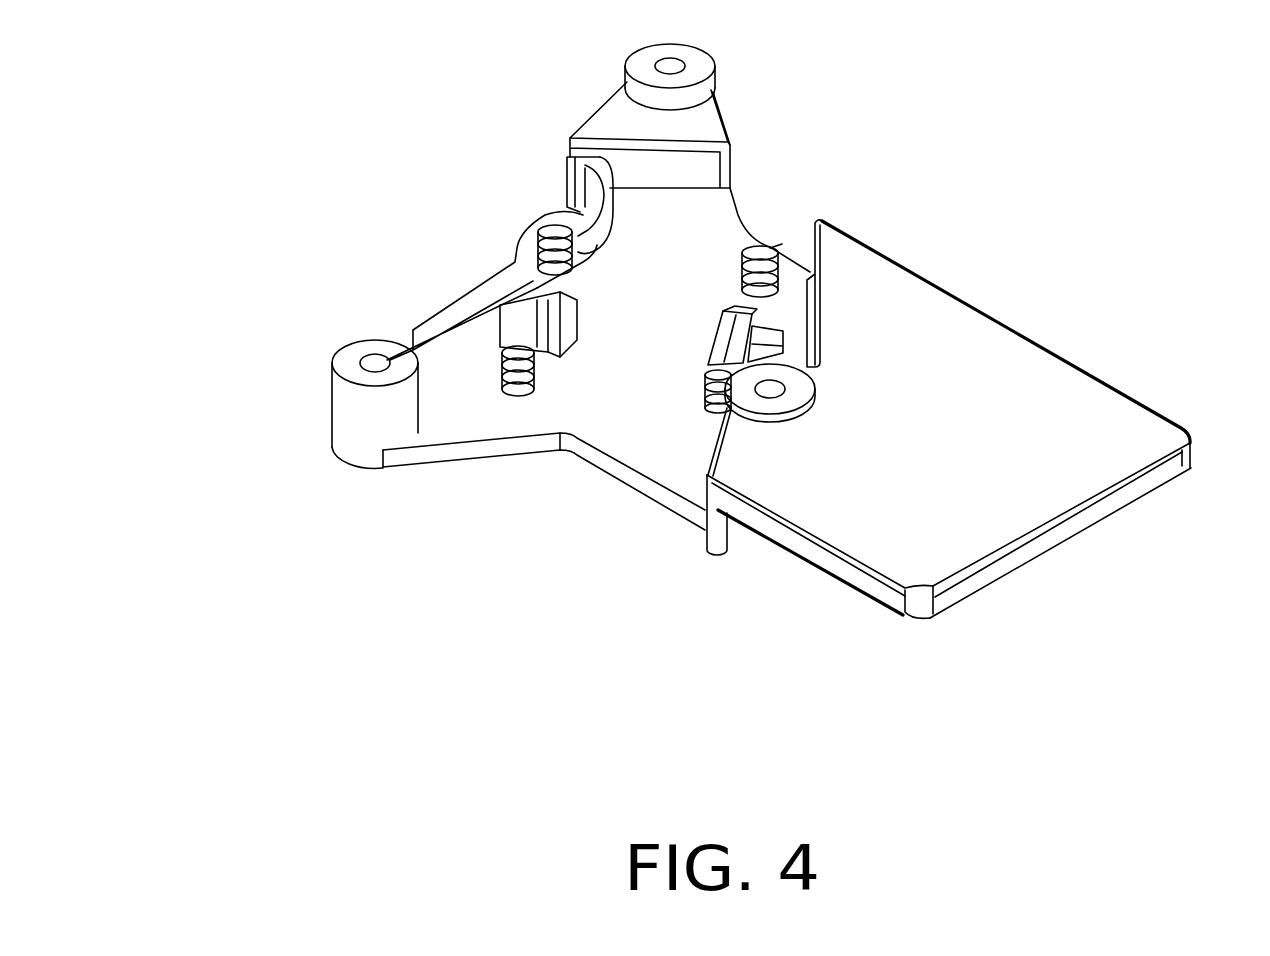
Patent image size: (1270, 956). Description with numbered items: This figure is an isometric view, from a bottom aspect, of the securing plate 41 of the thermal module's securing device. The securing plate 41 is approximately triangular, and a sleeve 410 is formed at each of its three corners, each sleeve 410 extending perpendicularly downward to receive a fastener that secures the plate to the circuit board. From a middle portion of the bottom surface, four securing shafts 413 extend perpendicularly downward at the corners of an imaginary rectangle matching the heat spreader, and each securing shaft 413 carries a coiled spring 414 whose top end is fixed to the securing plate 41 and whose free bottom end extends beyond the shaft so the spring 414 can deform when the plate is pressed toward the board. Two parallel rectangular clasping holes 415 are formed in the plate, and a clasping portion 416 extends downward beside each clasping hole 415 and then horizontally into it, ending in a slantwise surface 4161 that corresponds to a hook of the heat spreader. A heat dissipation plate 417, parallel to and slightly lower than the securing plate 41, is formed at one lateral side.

The securing plate 41 is at (718, 213).
The sleeve 410 is at (355, 408).
The securing shaft 413 is at (510, 393).
The spring 414 is at (497, 352).
The clasping hole 415 is at (768, 353).
The clasping portion 416 is at (727, 338).
The slantwise surface 4161 is at (758, 320).
The heat dissipation plate 417 is at (1007, 363).